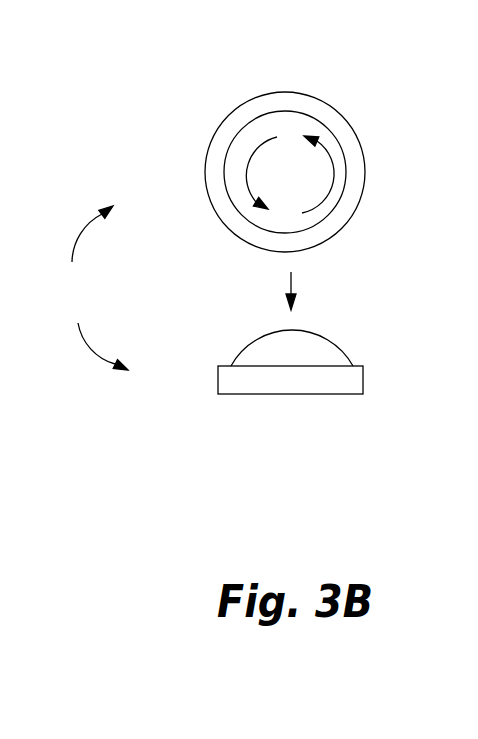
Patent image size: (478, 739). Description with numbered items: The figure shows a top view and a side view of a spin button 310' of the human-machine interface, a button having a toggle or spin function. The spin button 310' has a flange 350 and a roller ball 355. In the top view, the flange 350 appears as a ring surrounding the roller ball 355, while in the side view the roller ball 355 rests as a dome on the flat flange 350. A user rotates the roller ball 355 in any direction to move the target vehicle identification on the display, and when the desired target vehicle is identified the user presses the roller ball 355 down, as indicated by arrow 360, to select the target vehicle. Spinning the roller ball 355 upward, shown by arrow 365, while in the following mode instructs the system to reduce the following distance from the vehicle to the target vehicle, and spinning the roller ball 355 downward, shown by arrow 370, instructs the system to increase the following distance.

The flange 350 is at (347, 122).
The roller ball 355 is at (253, 137).
The arrow 360 is at (292, 283).
The arrow 365 is at (320, 176).
The arrow 370 is at (257, 158).
The spin button 310' is at (91, 288).